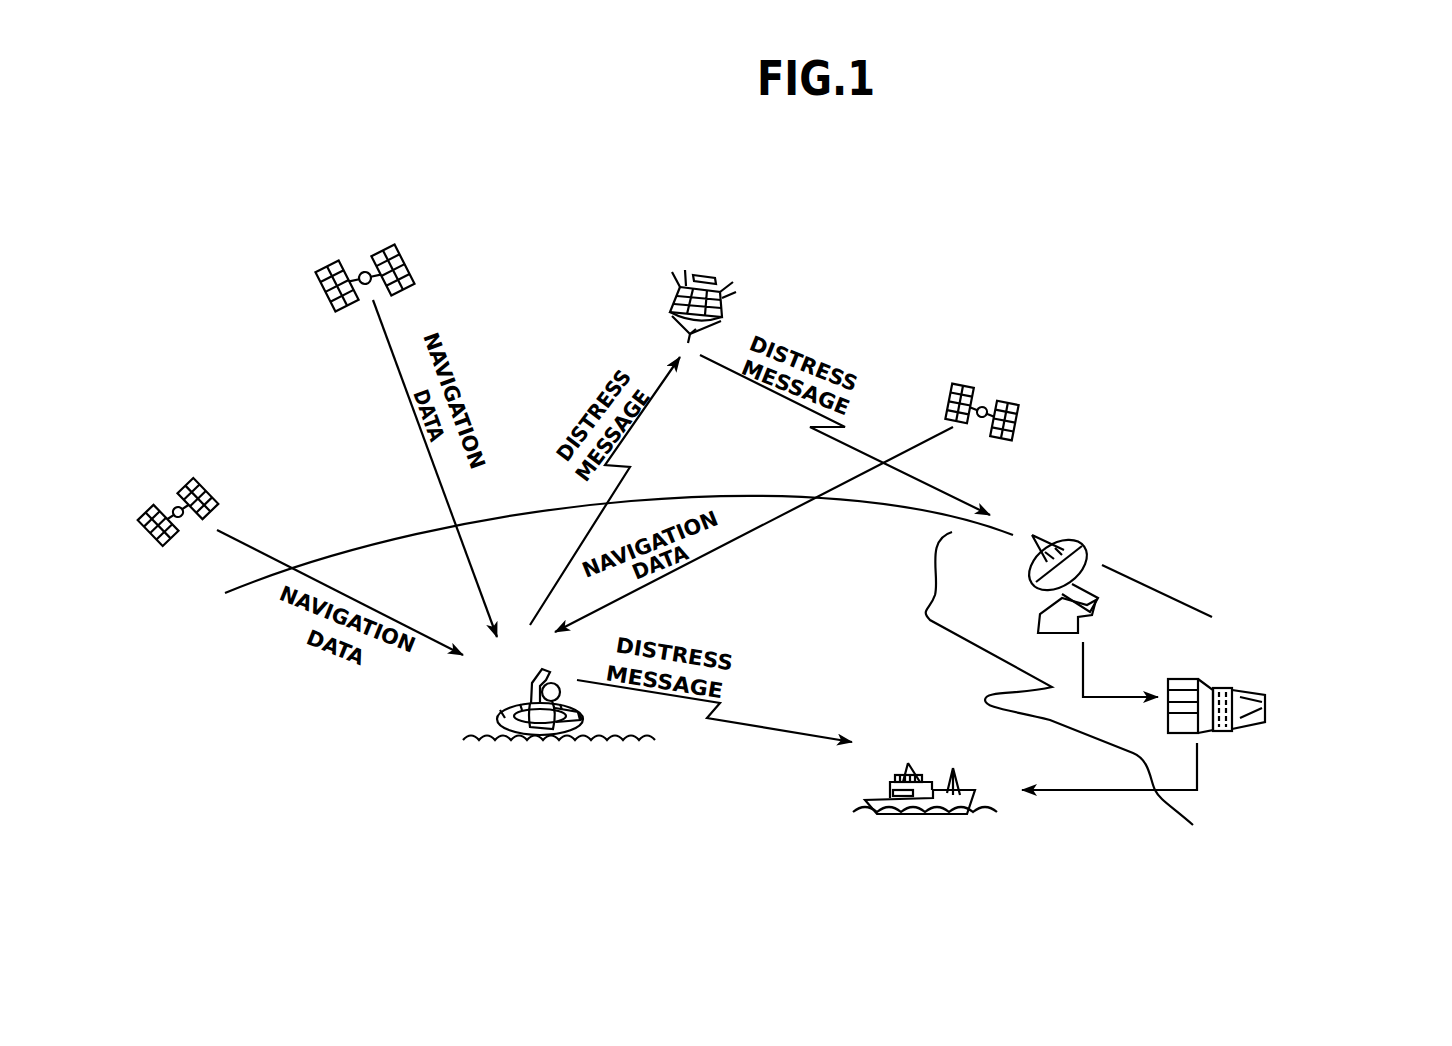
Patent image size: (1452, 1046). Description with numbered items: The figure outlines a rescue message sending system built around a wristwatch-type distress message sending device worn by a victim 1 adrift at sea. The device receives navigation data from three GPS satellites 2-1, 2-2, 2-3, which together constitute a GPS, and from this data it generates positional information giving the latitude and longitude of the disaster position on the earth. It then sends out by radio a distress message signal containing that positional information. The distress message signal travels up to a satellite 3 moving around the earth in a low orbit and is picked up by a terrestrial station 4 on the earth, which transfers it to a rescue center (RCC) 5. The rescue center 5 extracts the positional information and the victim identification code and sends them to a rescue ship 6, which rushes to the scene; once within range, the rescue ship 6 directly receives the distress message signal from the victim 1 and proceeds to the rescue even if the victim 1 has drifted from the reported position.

The victim 1 is at (540, 743).
The GPS satellite 2-1 is at (212, 495).
The GPS satellite 2-2 is at (410, 279).
The GPS satellite 2-3 is at (1028, 425).
The satellite 3 is at (712, 270).
The terrestrial station 4 is at (1097, 552).
The rescue center (RCC) 5 is at (1273, 695).
The rescue ship 6 is at (870, 818).